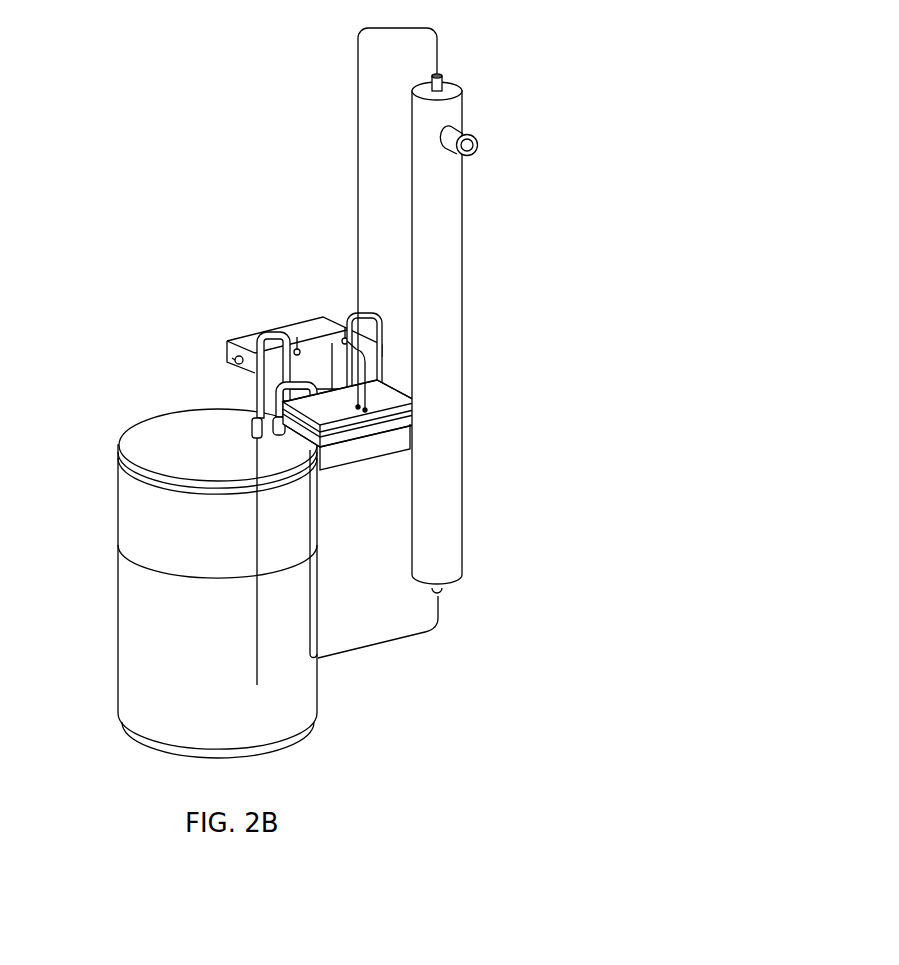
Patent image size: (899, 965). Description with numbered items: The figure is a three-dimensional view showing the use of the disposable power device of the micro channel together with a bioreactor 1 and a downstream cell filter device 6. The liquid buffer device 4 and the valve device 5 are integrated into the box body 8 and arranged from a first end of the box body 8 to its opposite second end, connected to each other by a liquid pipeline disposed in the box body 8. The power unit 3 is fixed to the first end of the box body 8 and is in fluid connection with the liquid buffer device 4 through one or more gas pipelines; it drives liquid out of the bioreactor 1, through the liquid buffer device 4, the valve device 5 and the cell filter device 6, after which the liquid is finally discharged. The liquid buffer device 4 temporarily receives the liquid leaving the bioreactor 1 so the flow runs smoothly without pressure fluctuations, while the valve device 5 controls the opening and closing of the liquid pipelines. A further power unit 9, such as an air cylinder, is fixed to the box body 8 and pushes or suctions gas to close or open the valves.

The bioreactor 1 is at (158, 443).
The power unit 3 is at (315, 325).
The liquid buffer device 4 is at (268, 387).
The valve device 5 is at (355, 400).
The cell filter device 6 is at (440, 345).
The box body 8 is at (200, 305).
The power unit 9 is at (385, 447).